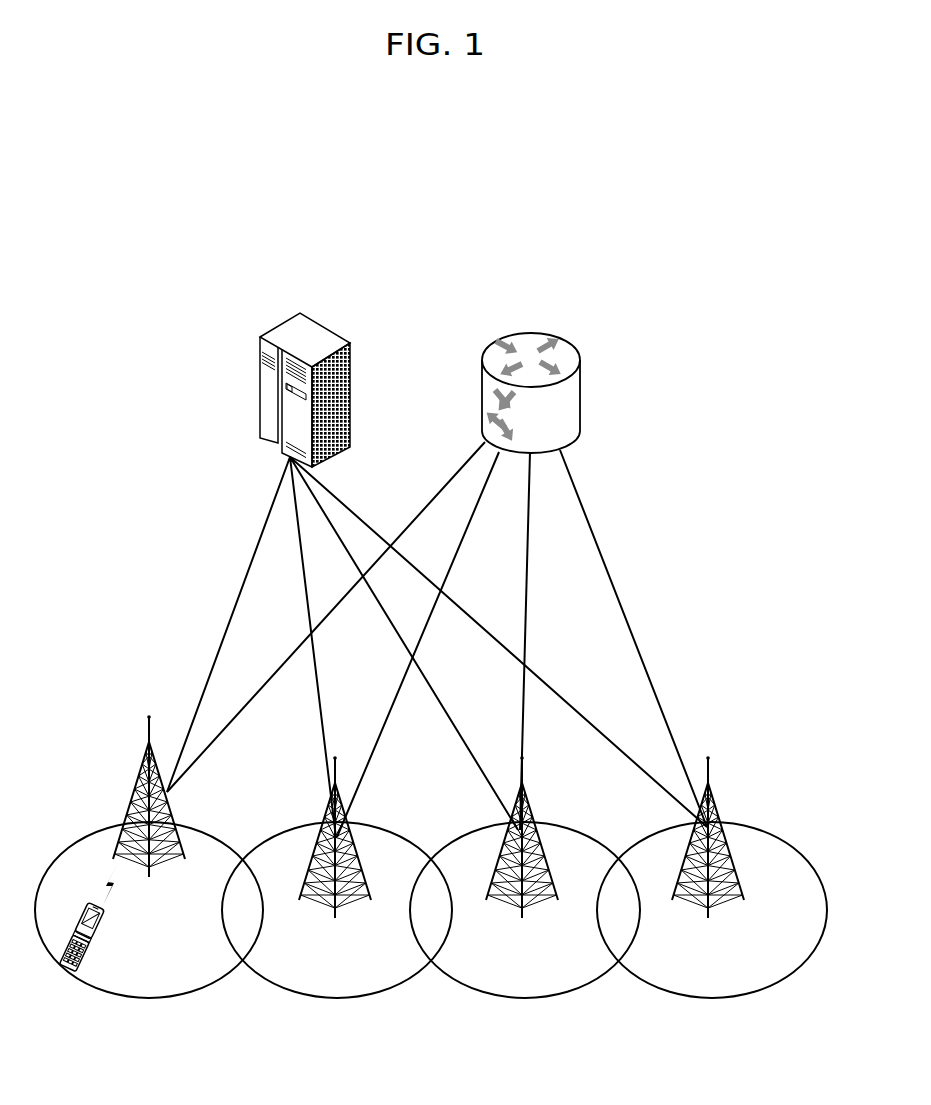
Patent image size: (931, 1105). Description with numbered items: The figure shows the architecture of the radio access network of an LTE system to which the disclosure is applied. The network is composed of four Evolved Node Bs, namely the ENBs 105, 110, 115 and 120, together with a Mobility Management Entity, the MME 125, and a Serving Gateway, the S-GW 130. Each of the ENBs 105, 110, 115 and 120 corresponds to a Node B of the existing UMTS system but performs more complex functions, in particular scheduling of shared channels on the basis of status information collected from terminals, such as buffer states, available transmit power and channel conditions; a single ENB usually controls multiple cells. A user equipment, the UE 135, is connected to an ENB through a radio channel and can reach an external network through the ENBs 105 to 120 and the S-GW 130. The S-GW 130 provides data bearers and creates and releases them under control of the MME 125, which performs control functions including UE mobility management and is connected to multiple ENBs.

The Evolved Node B 105 is at (137, 777).
The Evolved Node B 110 is at (328, 802).
The Evolved Node B 115 is at (532, 800).
The Evolved Node B 120 is at (715, 802).
The Mobility Management Entity 125 is at (290, 335).
The Serving Gateway 130 is at (528, 340).
The user equipment 135 is at (102, 933).